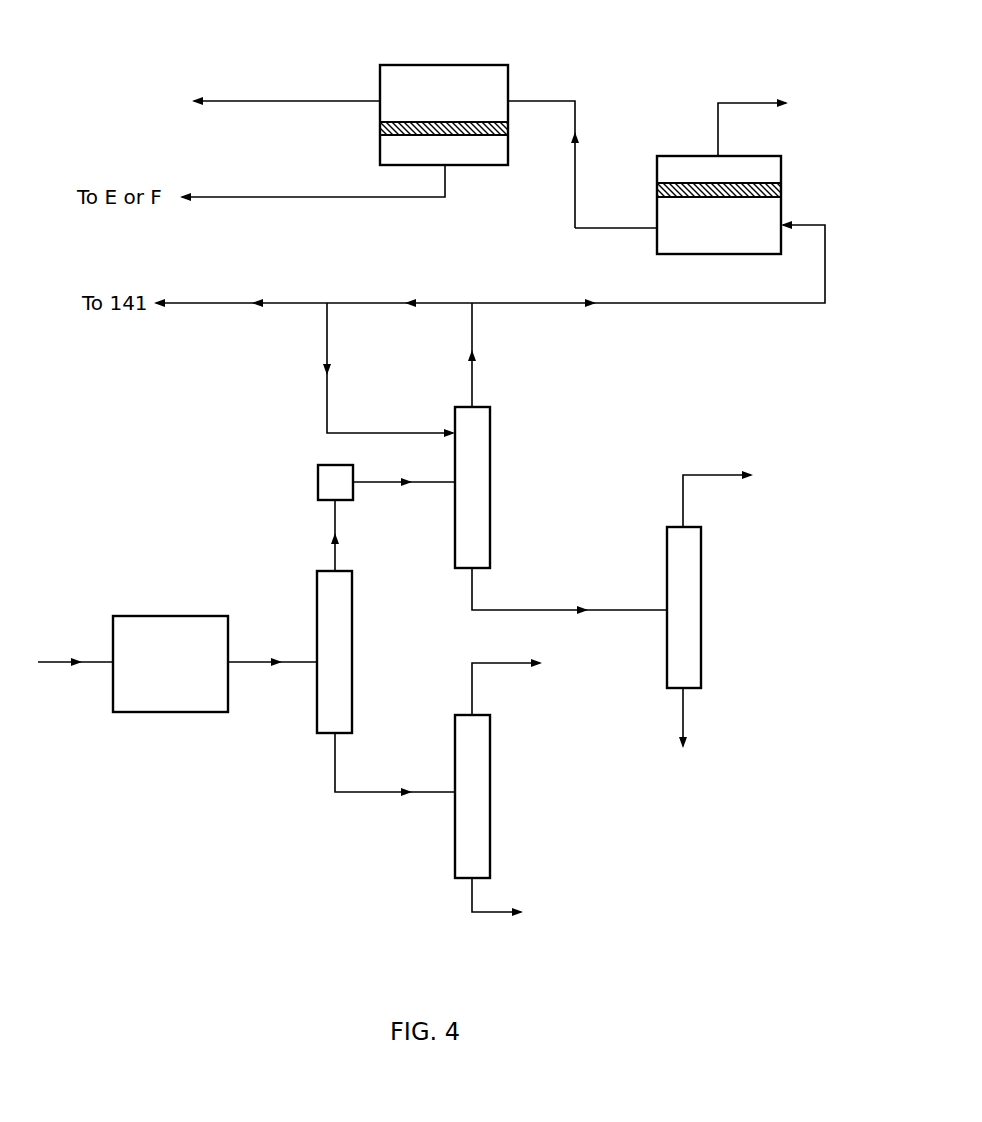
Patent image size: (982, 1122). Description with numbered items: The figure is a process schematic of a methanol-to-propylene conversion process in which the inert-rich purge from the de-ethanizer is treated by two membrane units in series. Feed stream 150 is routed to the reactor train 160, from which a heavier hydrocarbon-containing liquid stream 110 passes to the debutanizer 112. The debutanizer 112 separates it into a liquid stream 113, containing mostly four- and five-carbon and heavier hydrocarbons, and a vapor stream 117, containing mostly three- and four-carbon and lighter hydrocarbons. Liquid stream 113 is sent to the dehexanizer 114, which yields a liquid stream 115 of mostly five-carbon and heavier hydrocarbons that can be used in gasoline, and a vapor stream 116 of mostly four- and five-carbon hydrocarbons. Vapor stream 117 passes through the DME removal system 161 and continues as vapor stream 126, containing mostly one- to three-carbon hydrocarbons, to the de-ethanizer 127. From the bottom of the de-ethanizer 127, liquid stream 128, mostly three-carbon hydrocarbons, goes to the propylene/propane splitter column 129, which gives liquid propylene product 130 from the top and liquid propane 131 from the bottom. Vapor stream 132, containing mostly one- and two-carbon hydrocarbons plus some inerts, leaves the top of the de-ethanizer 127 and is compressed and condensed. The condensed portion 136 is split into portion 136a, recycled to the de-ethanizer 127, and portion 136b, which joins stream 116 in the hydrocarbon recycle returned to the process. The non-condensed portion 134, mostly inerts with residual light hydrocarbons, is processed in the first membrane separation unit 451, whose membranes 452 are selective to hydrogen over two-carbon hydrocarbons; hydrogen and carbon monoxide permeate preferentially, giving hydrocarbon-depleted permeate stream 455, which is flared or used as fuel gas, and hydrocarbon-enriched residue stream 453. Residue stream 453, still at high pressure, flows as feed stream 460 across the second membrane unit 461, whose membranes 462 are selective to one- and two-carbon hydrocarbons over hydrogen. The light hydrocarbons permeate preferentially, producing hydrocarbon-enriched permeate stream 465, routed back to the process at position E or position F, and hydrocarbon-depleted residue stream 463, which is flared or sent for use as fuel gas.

The heavier hydrocarbon-containing liquid stream 110 is at (272, 676).
The debutanizer 112 is at (317, 713).
The liquid stream 113 is at (395, 778).
The dehexanizer 114 is at (490, 752).
The liquid stream 115 is at (500, 913).
The vapor stream 116 is at (509, 687).
The vapor stream 117 is at (315, 535).
The vapor stream 126 is at (404, 495).
The de-ethanizer 127 is at (490, 455).
The liquid stream 128 is at (569, 591).
The propylene/propane splitter column 129 is at (701, 568).
The liquid propylene product 130 is at (722, 487).
The liquid propane 131 is at (684, 731).
The vapor stream 132 is at (491, 355).
The non-condensed portion 134 is at (648, 264).
The condensed portion 136 is at (399, 291).
The portion 136a is at (362, 370).
The portion 136b is at (240, 291).
The feed stream 150 is at (75, 676).
The reactor train 160 is at (148, 712).
The DME removal system 161 is at (318, 485).
The first membrane separation unit 451 is at (689, 155).
The membranes 452 is at (781, 185).
The residue stream 453 is at (628, 227).
The permeate stream 455 is at (755, 115).
The feed stream 460 is at (538, 101).
The second membrane unit 461 is at (380, 75).
The membranes 462 is at (380, 128).
The residue stream 463 is at (286, 90).
The permeate stream 465 is at (292, 197).